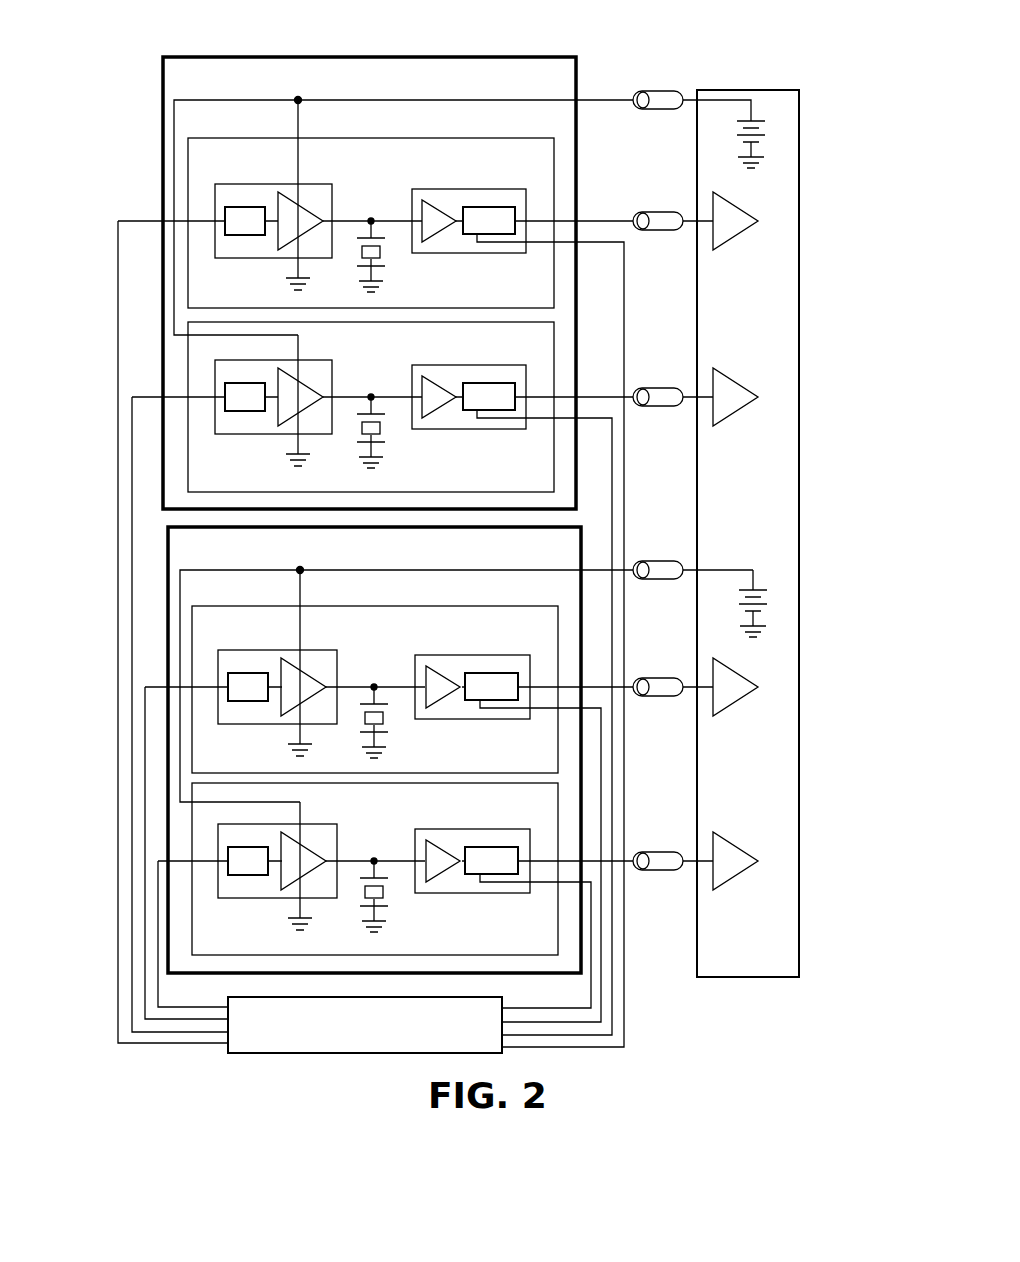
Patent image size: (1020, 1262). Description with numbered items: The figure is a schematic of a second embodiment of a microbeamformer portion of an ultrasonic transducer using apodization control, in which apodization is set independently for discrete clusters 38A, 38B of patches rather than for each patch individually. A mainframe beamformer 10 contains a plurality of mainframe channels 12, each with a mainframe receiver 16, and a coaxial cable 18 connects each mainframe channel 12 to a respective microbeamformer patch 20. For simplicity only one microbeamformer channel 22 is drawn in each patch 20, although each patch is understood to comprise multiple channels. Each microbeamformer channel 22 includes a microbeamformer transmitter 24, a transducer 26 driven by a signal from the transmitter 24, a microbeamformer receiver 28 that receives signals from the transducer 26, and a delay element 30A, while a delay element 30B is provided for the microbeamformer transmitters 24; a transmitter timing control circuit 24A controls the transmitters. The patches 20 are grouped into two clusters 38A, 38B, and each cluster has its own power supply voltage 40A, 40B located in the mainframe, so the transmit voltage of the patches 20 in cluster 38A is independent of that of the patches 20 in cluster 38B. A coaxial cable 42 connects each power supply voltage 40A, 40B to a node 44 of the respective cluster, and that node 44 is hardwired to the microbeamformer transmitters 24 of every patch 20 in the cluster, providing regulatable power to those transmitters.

The mainframe beamformer 10 is at (757, 978).
The mainframe channel 12 is at (749, 841).
The mainframe receiver 16 is at (741, 910).
The coaxial cable 18 is at (658, 231).
The microbeamformer patch 20 is at (190, 367).
The microbeamformer channel 22 is at (412, 166).
The microbeamformer transmitter 24 is at (300, 198).
The transmitter timing control circuit 24A is at (255, 1035).
The transducer 26 is at (383, 253).
The microbeamformer receiver 28 is at (436, 201).
The delay element 30A is at (480, 228).
The delay element 30B is at (241, 910).
The cluster 38A is at (155, 70).
The cluster 38B is at (163, 550).
The power supply voltage 40A is at (778, 182).
The power supply voltage 40B is at (783, 650).
The coaxial cable 42 is at (655, 110).
The node 44 is at (298, 98).